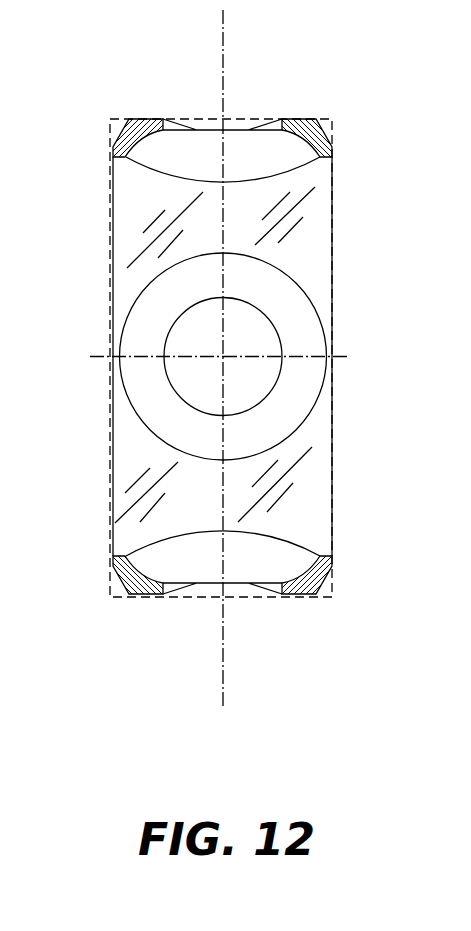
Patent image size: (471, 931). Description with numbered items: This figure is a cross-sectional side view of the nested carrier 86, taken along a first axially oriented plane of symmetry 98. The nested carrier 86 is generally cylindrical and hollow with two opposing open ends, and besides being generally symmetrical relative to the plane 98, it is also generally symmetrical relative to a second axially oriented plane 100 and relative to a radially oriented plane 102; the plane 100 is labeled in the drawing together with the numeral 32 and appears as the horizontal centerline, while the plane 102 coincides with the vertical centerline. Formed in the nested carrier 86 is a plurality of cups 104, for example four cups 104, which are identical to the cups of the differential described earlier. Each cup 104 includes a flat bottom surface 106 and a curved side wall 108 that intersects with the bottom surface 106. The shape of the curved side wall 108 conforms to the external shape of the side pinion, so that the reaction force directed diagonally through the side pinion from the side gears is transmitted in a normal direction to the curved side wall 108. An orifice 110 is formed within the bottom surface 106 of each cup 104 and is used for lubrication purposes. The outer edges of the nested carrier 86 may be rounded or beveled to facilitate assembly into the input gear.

The nested carrier 86 is at (353, 67).
The first axially oriented plane of symmetry 98 is at (121, 599).
The second axially oriented plane 100 is at (338, 357).
The optical element 32 is at (323, 378).
The radially oriented plane 102 is at (223, 690).
The cup 104 is at (131, 181).
The flat bottom surface 106 is at (182, 141).
The curved side wall 108 is at (296, 148).
The orifice 110 is at (262, 126).